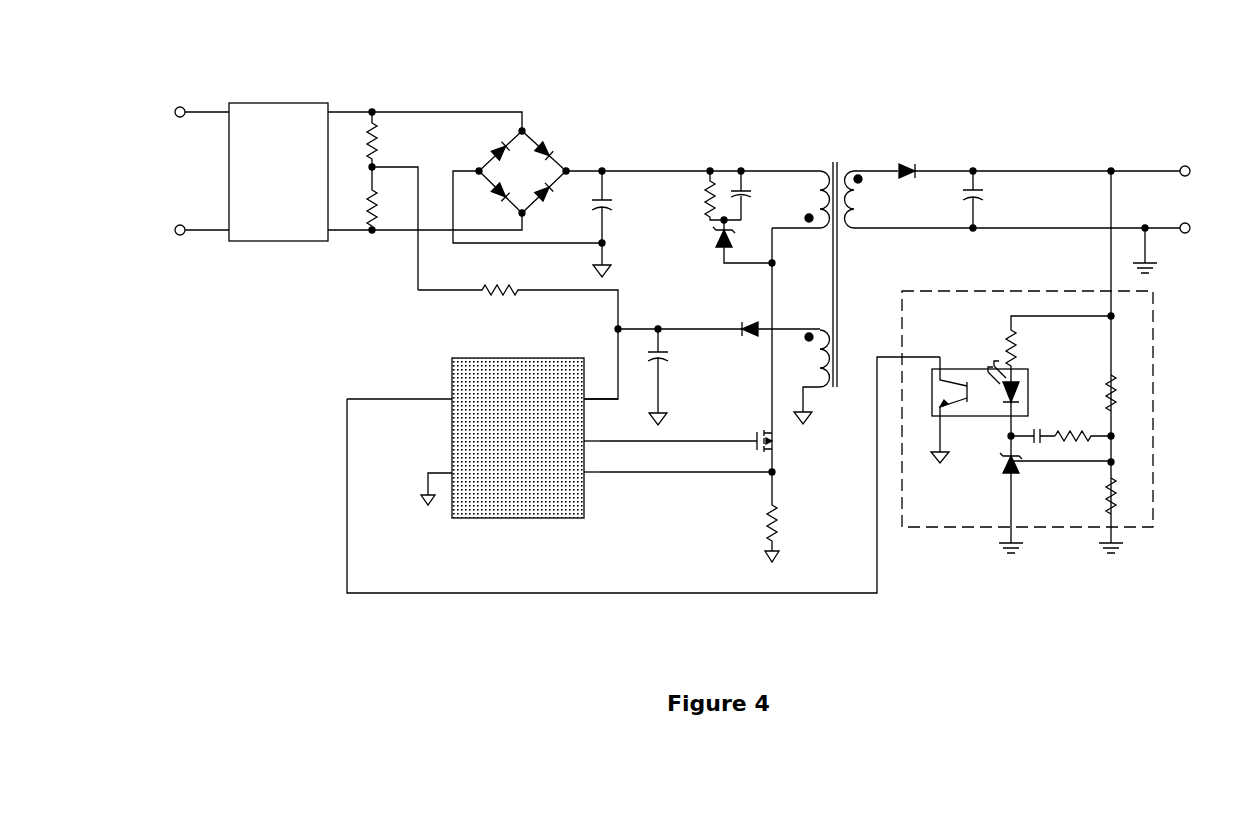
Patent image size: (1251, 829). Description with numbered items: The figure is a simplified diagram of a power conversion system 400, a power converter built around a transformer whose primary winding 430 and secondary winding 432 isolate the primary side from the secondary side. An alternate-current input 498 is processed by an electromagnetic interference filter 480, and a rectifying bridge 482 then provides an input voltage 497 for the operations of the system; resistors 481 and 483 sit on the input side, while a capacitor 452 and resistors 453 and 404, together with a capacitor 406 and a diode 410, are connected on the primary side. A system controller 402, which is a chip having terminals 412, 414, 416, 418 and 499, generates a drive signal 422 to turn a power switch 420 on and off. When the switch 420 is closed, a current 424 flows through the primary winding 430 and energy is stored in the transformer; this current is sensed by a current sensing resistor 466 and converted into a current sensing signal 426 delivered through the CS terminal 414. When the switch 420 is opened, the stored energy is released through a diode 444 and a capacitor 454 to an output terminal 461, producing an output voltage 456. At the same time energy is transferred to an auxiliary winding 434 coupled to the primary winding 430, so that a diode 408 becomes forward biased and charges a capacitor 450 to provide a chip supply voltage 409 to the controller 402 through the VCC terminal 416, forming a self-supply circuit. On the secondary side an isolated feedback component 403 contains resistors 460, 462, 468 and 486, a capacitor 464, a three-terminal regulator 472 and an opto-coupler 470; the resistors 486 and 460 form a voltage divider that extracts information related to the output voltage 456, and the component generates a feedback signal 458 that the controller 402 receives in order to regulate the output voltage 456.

The power conversion system 400 is at (305, 619).
The system controller 402 is at (541, 518).
The isolated feedback component 403 is at (1153, 527).
The resistor 404 is at (706, 193).
The capacitor 406 is at (752, 192).
The diode 408 is at (749, 320).
The chip supply voltage 409 is at (617, 347).
The diode 410 is at (716, 250).
The terminal 412 is at (586, 444).
The terminal 414 is at (586, 475).
The terminal 416 is at (586, 402).
The terminal 418 is at (448, 396).
The power switch 420 is at (784, 439).
The drive signal 422 is at (709, 440).
The current 424 is at (773, 245).
The current sensing signal 426 is at (698, 476).
The primary winding 430 is at (819, 166).
The secondary winding 432 is at (859, 166).
The auxiliary winding 434 is at (822, 380).
The diode 444 is at (907, 163).
The capacitor 450 is at (670, 358).
The capacitor 452 is at (612, 210).
The resistor 453 is at (495, 286).
The capacitor 454 is at (985, 200).
The output voltage 456 is at (1176, 214).
The feedback signal 458 is at (877, 580).
The resistor 460 is at (1102, 498).
The output terminal 461 is at (1182, 166).
The resistor 462 is at (1083, 429).
The capacitor 464 is at (1036, 429).
The current sensing resistor 466 is at (778, 492).
The resistor 468 is at (1005, 340).
The opto-coupler 470 is at (968, 367).
The three-terminal regulator 472 is at (1002, 474).
The electromagnetic interference filter 480 is at (283, 103).
The resistor 481 is at (374, 122).
The rectifying bridge 482 is at (539, 132).
The resistor 483 is at (366, 202).
The resistor 486 is at (1104, 390).
The input voltage 497 is at (589, 165).
The alternate-current input 498 is at (208, 201).
The terminal 499 is at (447, 470).